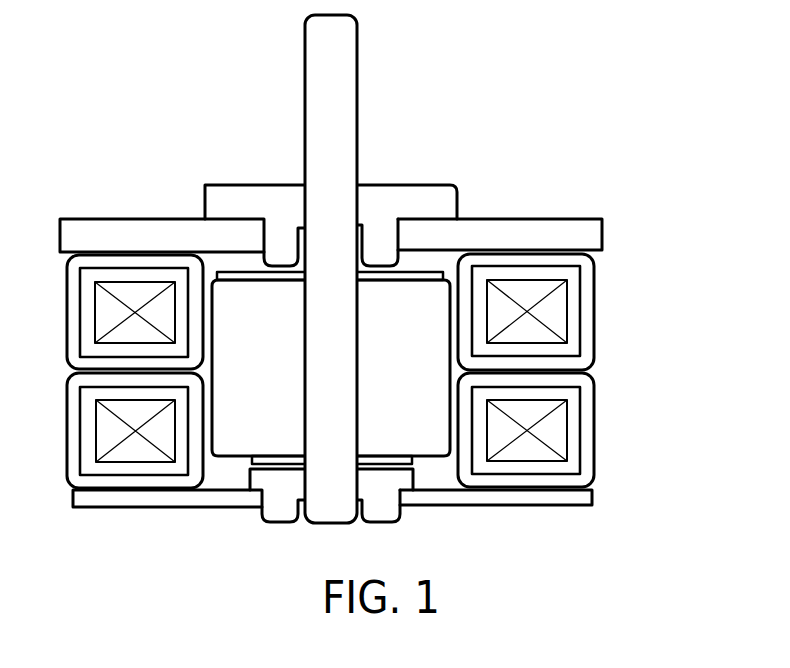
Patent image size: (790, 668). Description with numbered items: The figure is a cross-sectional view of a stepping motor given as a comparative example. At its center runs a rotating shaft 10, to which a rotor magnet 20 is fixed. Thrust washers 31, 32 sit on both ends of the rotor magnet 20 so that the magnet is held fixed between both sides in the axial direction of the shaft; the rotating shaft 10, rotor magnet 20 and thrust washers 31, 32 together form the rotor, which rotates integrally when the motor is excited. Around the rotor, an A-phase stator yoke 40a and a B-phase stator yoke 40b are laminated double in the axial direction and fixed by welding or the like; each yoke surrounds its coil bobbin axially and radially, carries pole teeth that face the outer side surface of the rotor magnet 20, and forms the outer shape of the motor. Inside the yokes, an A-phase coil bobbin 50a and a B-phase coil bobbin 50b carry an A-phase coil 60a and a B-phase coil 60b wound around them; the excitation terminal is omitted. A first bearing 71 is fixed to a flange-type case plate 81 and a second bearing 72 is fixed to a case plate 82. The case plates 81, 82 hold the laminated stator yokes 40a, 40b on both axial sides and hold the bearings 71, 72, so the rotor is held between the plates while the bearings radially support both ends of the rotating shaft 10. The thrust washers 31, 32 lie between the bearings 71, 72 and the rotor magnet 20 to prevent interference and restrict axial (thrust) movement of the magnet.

The rotating shaft 10 is at (340, 78).
The rotor magnet 20 is at (255, 432).
The thrust washer 31 is at (235, 275).
The thrust washer 32 is at (300, 463).
The A-phase stator yoke 40a is at (585, 269).
The A-phase coil bobbin 50a is at (577, 312).
The A-phase coil 60a is at (581, 333).
The B-phase stator yoke 40b is at (586, 396).
The B-phase coil bobbin 50b is at (573, 438).
The B-phase coil 60b is at (565, 456).
The bearing 71 is at (387, 198).
The bearing 72 is at (385, 506).
The case plate 81 is at (497, 237).
The case plate 82 is at (577, 497).